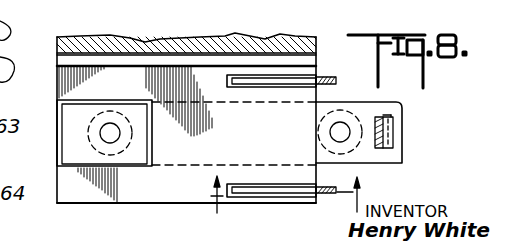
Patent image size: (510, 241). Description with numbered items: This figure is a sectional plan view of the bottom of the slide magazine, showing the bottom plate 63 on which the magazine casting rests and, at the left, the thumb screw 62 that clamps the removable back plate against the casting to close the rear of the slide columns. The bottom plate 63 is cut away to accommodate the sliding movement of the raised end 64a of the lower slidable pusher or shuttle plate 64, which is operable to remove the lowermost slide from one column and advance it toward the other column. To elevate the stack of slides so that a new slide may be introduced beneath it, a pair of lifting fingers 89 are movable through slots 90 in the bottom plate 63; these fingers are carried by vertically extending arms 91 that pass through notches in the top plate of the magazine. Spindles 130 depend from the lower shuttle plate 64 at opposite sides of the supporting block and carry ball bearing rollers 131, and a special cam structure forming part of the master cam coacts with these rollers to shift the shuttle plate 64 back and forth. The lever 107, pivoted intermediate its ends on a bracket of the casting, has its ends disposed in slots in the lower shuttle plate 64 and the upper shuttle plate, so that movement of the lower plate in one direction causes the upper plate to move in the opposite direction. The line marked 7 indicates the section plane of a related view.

The section line 7- 7 is at (286, 206).
The thumb screw 62 is at (19, 41).
The bottom plate 63 is at (135, 188).
The lower slidable pusher or shuttle plate 64 is at (383, 158).
The raised end of the lower shuttle plate 64a is at (78, 112).
The lifting fingers 89 is at (260, 80).
The slots 90 is at (296, 88).
The vertically extending arms 91 is at (337, 80).
The lever 107 is at (392, 133).
The spindles 130 is at (103, 134).
The ball bearing rollers 131 is at (92, 147).